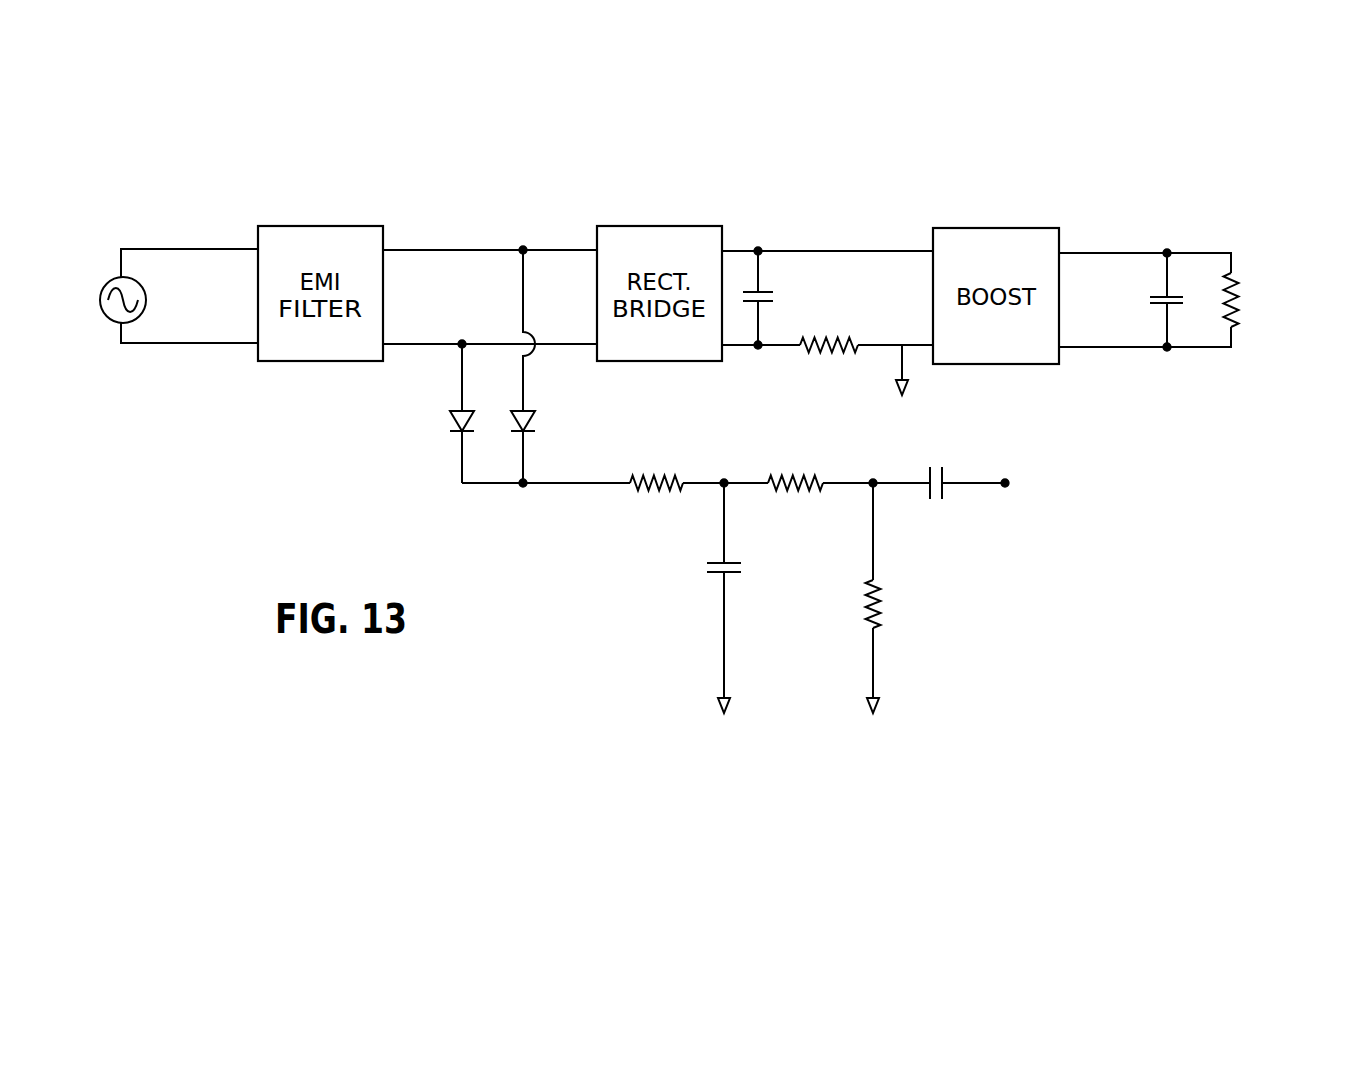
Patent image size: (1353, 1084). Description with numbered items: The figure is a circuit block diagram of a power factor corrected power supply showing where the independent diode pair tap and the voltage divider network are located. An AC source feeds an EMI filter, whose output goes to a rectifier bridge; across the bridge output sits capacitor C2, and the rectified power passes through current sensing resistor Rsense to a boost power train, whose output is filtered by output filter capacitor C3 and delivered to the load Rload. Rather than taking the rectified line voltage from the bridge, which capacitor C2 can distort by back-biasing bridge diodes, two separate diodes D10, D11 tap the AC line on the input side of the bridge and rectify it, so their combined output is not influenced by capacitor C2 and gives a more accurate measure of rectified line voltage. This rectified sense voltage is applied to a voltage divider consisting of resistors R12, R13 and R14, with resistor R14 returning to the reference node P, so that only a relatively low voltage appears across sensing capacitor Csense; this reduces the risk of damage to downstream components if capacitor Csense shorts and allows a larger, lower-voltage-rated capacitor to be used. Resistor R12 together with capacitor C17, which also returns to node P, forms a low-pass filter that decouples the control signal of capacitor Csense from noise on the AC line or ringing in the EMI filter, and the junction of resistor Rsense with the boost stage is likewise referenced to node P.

The capacitor C2 is at (780, 298).
The output filter capacitor C3 is at (1147, 300).
The current sensing resistor Rsense is at (827, 361).
The load Rload is at (1262, 300).
The separate diode D10 is at (435, 411).
The separate diode D11 is at (550, 364).
The resistor R12 is at (656, 467).
The resistor R13 is at (795, 467).
The resistor R14 is at (902, 590).
The capacitor C17 is at (750, 590).
The sensing capacitor Csense is at (932, 500).
The ground reference node P is at (812, 542).